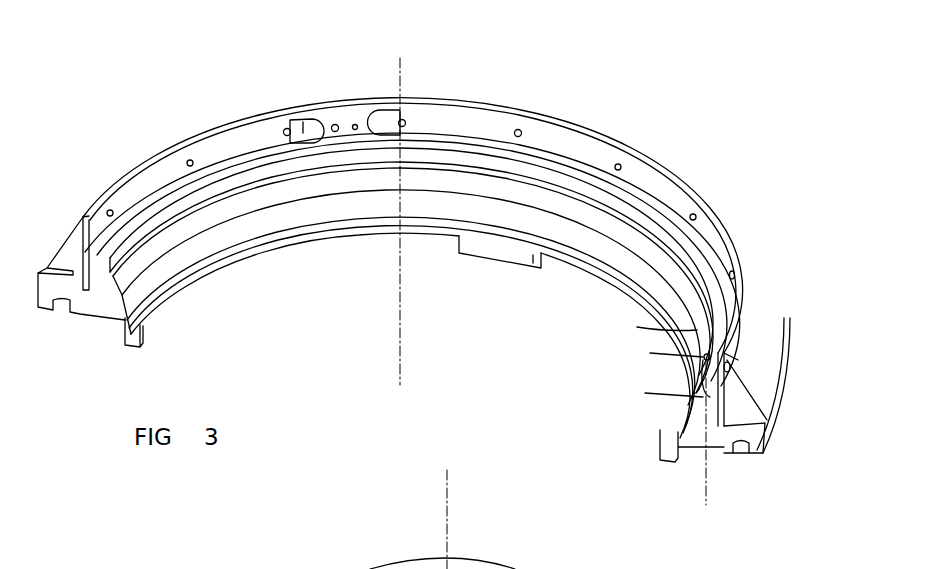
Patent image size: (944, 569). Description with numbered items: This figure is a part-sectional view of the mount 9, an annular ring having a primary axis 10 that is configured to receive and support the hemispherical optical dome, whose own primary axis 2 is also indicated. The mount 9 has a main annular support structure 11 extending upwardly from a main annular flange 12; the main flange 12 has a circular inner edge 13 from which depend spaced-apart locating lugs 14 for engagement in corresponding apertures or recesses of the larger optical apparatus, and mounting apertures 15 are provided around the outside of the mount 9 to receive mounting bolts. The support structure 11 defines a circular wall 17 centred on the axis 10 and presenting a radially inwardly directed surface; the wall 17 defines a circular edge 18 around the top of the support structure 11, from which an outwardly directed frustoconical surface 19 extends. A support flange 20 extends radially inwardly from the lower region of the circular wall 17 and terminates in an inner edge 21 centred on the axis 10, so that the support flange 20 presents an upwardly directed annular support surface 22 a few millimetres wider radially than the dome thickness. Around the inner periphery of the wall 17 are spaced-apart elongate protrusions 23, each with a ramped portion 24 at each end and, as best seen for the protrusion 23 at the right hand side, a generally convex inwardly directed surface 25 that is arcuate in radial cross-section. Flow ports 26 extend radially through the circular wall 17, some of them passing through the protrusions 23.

The primary axis 2 is at (447, 518).
The mount 9 is at (662, 140).
The primary axis 10 is at (400, 315).
The main annular support structure 11 is at (708, 447).
The main annular flange 12 is at (713, 337).
The circular inner edge 13 is at (597, 260).
The locating lugs 14 is at (152, 318).
The mounting apertures 15 is at (63, 280).
The circular wall 17 is at (603, 157).
The circular edge 18 is at (517, 107).
The frustoconical surface 19 is at (723, 300).
The support flange 20 is at (680, 393).
The inner edge 21 is at (677, 257).
The support surface 22 is at (640, 213).
The protrusions 23 is at (355, 127).
The ramped portion 24 is at (298, 120).
The convex inwardly directed surface 25 is at (663, 397).
The flow ports 26 is at (335, 128).